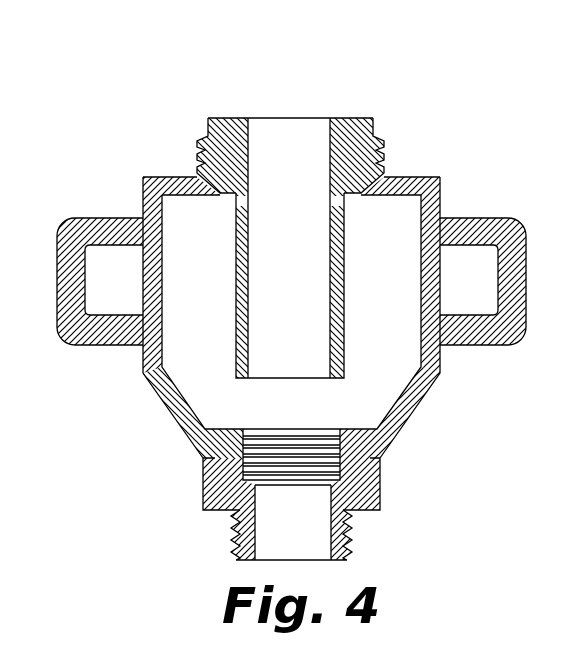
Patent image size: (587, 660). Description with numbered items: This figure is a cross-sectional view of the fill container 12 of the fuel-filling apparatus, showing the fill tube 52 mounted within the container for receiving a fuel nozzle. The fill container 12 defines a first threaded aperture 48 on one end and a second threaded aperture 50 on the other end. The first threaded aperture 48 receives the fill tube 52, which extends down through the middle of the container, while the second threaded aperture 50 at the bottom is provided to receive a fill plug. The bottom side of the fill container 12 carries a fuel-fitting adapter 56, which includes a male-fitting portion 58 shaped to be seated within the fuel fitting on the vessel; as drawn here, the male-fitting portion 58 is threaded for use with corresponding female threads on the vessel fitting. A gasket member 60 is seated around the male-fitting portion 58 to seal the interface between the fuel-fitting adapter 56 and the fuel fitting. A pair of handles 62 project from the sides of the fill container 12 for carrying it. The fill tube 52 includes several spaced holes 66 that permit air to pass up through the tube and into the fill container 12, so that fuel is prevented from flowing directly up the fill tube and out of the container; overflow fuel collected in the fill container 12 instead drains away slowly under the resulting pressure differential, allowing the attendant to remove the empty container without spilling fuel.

The fill container 12 is at (366, 88).
The first threaded aperture 48 is at (224, 193).
The second threaded aperture 50 is at (285, 453).
The fill tube 52 is at (222, 117).
The fuel-fitting adapter 56 is at (383, 482).
The male-fitting portion 58 is at (355, 530).
The gasket member 60 is at (212, 511).
The handles 62 is at (100, 218).
The spaced holes 66 is at (327, 188).